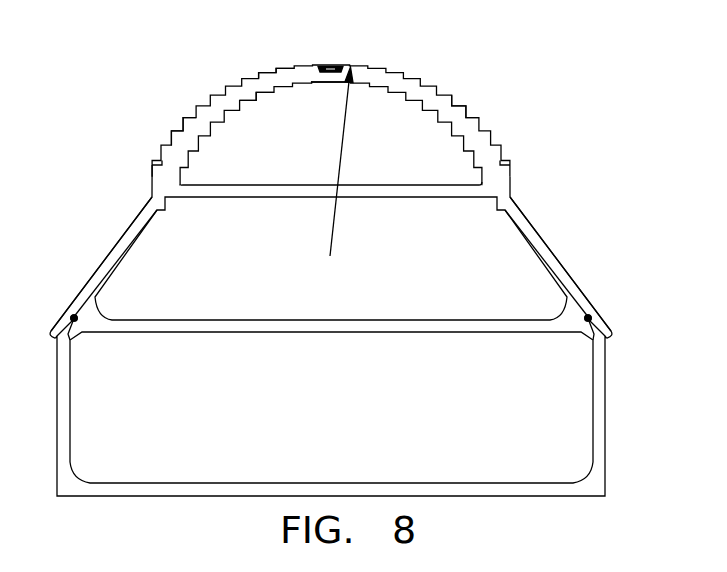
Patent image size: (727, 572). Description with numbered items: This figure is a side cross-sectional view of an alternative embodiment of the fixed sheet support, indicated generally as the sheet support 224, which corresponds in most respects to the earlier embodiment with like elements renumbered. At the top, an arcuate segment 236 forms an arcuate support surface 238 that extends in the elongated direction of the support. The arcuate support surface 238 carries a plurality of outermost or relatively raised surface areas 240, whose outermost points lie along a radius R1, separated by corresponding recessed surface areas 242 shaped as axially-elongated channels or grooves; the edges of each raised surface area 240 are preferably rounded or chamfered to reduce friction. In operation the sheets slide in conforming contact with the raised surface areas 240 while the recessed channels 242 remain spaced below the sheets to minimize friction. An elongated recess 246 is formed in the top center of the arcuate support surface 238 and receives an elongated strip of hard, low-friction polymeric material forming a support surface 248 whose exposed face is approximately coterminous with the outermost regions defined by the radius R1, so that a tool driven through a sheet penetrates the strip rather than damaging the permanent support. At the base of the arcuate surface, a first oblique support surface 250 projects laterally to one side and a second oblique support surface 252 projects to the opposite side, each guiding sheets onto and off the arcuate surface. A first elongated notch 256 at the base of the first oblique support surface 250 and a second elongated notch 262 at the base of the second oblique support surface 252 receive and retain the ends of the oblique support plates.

The sheet support 224 is at (441, 79).
The arcuate segment 236 is at (258, 90).
The arcuate support surface 238 is at (273, 74).
The raised surface areas 240 is at (453, 106).
The recessed surface areas 242 is at (195, 130).
The elongated recess 246 is at (329, 82).
The support surface 248 is at (326, 67).
The first oblique support surface 250 is at (548, 248).
The second oblique support surface 252 is at (114, 252).
The first elongated notch 256 is at (590, 335).
The second elongated notch 262 is at (74, 330).
The radius R1 is at (338, 212).